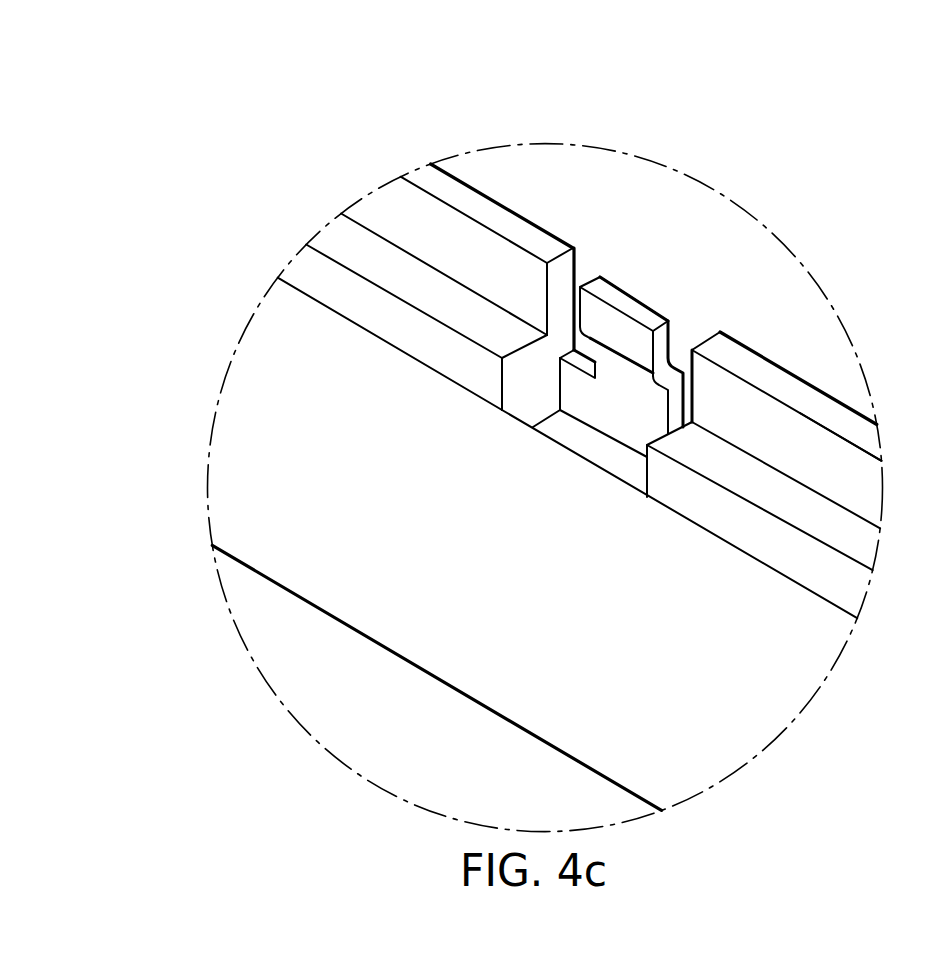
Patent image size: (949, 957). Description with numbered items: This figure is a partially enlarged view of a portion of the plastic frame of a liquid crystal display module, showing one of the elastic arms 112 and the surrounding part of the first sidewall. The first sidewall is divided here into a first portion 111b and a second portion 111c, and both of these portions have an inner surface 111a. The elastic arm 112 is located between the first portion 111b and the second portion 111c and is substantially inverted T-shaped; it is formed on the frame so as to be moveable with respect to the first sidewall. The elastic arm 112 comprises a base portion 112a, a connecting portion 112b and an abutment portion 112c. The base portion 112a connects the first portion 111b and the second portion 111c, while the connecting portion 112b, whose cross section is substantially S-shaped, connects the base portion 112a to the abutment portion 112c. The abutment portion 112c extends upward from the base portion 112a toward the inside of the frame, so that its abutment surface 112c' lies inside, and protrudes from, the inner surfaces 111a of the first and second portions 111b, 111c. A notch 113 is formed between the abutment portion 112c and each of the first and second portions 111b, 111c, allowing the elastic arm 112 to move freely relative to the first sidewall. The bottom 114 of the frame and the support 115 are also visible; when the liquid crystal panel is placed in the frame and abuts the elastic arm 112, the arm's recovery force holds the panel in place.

The inner surface 111a is at (442, 238).
The first portion 111b is at (579, 316).
The second portion 111c is at (822, 407).
The elastic arm 112 is at (694, 252).
The base portion 112a is at (754, 305).
The connecting portion 112b is at (670, 363).
The abutment portion 112c is at (645, 211).
The abutment surface 112c' is at (612, 232).
The notch 113 is at (582, 292).
The bottom 114 is at (245, 408).
The support 115 is at (378, 258).